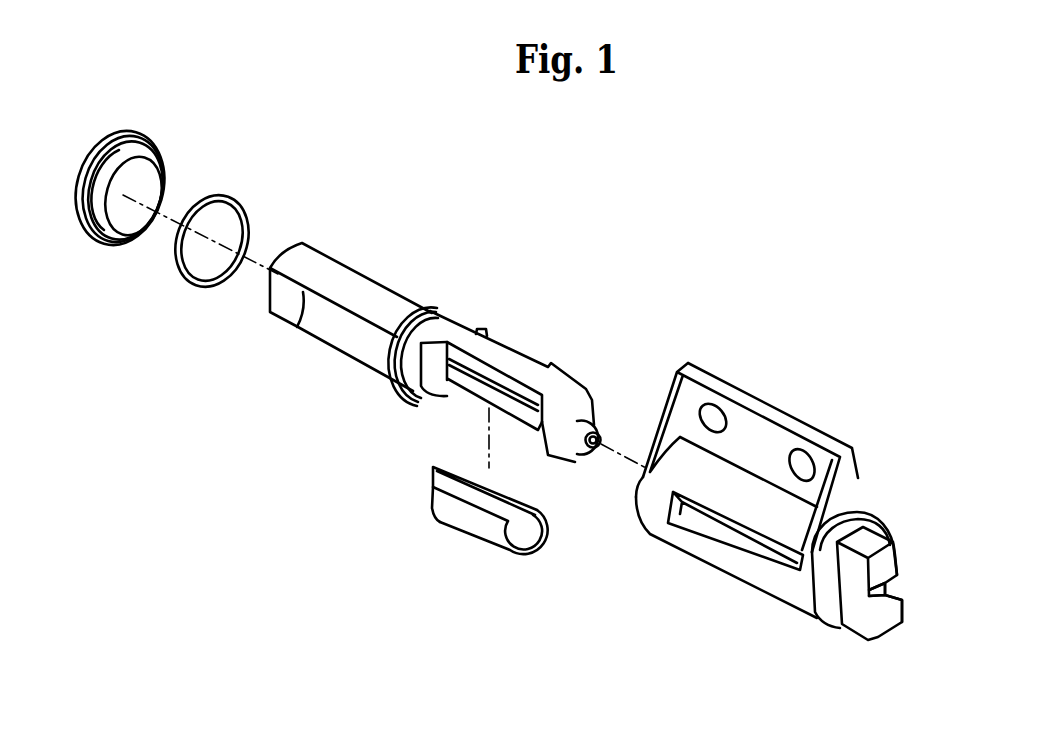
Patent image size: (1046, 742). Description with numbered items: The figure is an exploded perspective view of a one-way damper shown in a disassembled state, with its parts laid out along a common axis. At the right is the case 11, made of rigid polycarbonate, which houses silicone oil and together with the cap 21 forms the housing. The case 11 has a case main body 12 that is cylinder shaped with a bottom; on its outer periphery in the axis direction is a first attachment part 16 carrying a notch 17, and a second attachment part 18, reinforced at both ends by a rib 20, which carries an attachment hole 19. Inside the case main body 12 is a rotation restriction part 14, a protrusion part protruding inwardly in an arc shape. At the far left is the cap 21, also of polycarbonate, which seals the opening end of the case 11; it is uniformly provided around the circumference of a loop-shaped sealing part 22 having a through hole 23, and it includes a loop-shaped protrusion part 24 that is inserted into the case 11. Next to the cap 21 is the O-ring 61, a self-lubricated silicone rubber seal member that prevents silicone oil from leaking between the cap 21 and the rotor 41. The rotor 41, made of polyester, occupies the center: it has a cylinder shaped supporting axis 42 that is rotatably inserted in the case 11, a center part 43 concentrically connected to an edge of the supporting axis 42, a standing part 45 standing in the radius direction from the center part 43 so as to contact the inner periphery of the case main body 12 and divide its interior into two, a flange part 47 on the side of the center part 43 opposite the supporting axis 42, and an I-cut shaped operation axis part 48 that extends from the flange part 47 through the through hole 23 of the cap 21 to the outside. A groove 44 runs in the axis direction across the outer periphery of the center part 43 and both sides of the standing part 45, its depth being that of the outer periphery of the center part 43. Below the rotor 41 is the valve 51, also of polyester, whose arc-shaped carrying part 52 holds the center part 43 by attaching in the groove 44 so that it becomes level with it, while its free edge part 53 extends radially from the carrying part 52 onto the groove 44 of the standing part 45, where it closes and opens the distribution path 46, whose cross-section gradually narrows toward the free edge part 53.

The case 11 is at (759, 595).
The case main body 12 is at (660, 538).
The rotation restriction part 14 is at (737, 534).
The first attachment part 16 is at (860, 618).
The notch 17 is at (889, 636).
The second attachment part 18 is at (763, 428).
The attachment hole 19 is at (709, 406).
The rib 20 is at (657, 405).
The cap 21 is at (168, 142).
The sealing part 22 is at (81, 242).
The through hole 23 is at (138, 188).
The loop-shaped protrusion part 24 is at (103, 247).
The rotor 41 is at (375, 377).
The supporting axis 42 is at (582, 447).
The center part 43 is at (430, 383).
The groove 44 is at (470, 402).
The standing part 45 is at (490, 352).
The distribution path 46 is at (510, 380).
The flange part 47 is at (440, 310).
The operation axis part 48 is at (363, 287).
The valve 51 is at (524, 557).
The carrying part 52 is at (489, 532).
The free edge part 53 is at (458, 490).
The O-ring 61 is at (204, 282).